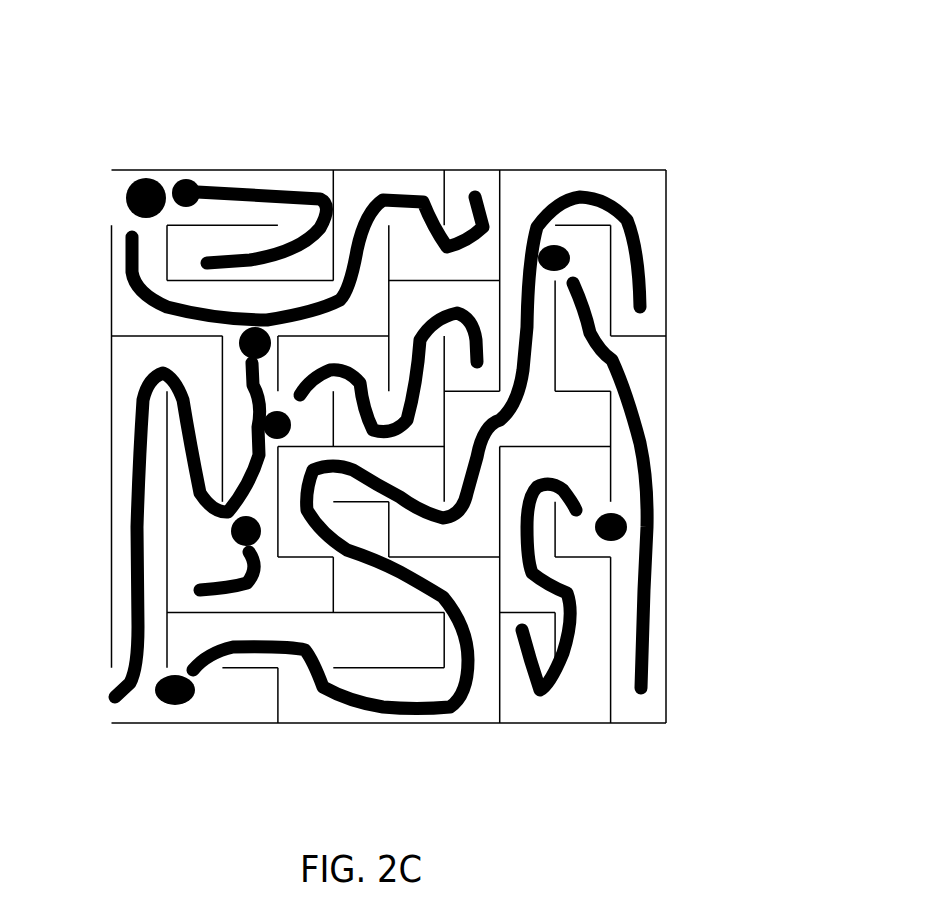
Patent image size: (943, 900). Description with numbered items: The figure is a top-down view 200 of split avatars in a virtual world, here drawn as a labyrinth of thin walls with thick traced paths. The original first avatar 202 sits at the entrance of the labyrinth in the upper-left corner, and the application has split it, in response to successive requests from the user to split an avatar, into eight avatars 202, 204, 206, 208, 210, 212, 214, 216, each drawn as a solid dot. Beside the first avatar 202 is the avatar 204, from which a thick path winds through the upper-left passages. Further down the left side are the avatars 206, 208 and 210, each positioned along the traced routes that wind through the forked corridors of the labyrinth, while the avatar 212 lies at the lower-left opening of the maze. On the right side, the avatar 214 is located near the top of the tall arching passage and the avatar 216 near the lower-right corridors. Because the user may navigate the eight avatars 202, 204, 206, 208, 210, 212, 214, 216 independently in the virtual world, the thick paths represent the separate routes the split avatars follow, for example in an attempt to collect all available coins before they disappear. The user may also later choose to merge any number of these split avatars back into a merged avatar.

The top-down view 200 is at (623, 32).
The first avatar 202 is at (128, 180).
The avatar 204 is at (197, 180).
The avatar 206 is at (240, 345).
The avatar 208 is at (262, 425).
The avatar 210 is at (232, 533).
The avatar 212 is at (175, 705).
The avatar 214 is at (570, 256).
The avatar 216 is at (626, 522).